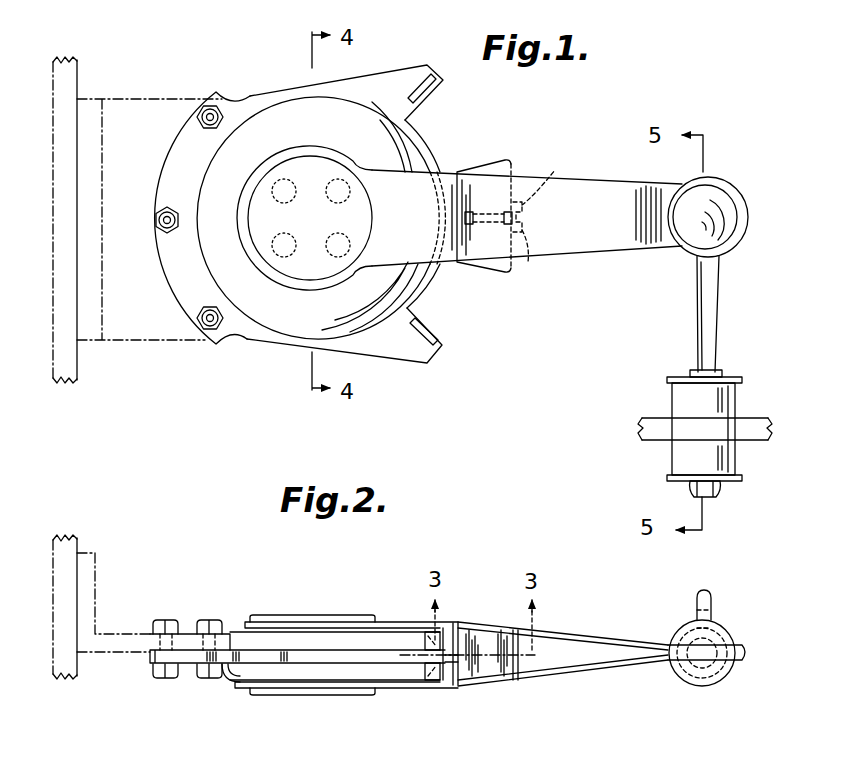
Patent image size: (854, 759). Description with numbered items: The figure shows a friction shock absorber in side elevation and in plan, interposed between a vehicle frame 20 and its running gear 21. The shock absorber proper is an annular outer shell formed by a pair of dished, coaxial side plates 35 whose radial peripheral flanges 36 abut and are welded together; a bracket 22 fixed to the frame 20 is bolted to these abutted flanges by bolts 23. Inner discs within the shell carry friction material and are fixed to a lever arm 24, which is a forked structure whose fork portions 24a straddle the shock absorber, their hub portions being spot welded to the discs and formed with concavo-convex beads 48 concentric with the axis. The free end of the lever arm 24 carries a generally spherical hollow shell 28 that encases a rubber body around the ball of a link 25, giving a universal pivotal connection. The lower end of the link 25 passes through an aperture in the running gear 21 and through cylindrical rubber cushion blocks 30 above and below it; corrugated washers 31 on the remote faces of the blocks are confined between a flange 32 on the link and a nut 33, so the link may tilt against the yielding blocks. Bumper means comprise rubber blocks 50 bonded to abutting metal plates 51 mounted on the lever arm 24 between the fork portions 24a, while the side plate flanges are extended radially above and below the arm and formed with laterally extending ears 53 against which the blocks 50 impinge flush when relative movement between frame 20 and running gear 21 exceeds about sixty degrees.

In FIG. 1, the frame 20 is at (80, 80).
In FIG. 2, the frame 20 is at (80, 544).
In FIG. 1, the running gear 21 is at (752, 428).
In FIG. 1, the bracket 22 is at (102, 345).
In FIG. 2, the bracket 22 is at (98, 590).
In FIG. 1, the bolts 23 is at (210, 110).
In FIG. 2, the bolts 23 is at (165, 620).
In FIG. 1, the lever arm 24 is at (745, 230).
In FIG. 2, the lever arm 24 is at (735, 650).
In FIG. 1, the fork portions 24a is at (556, 246).
In FIG. 2, the fork portions 24a is at (560, 640).
In FIG. 1, the link 25 is at (708, 325).
In FIG. 2, the link 25 is at (711, 594).
In FIG. 1, the hollow shell 28 is at (712, 200).
In FIG. 2, the hollow shell 28 is at (715, 676).
In FIG. 1, the rubber cushion blocks 30 is at (684, 393).
In FIG. 1, the corrugated washers 31 is at (670, 378).
In FIG. 1, the flange 32 is at (722, 376).
In FIG. 1, the nut 33 is at (716, 492).
In FIG. 1, the side plates 35 is at (262, 308).
In FIG. 2, the side plates 35 is at (355, 630).
In FIG. 1, the radial peripheral flange 36 is at (266, 112).
In FIG. 2, the radial peripheral flange 36 is at (320, 632).
In FIG. 1, the concavo-convex beads 48 is at (366, 240).
In FIG. 2, the concavo-convex beads 48 is at (282, 616).
In FIG. 1, the rubber blocks 50 is at (488, 168).
In FIG. 2, the rubber blocks 50 is at (485, 676).
In FIG. 1, the metal plates 51 is at (555, 170).
In FIG. 2, the metal plates 51 is at (520, 660).
In FIG. 1, the ears 53 is at (440, 88).
In FIG. 2, the ears 53 is at (433, 642).